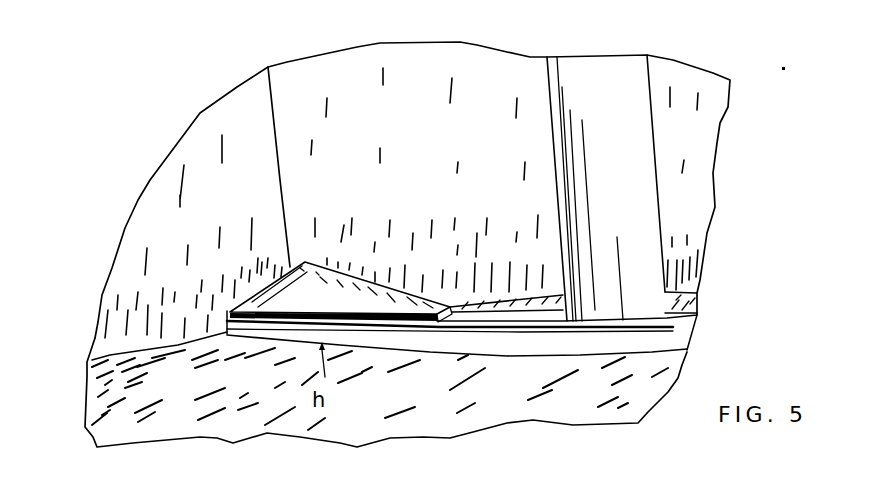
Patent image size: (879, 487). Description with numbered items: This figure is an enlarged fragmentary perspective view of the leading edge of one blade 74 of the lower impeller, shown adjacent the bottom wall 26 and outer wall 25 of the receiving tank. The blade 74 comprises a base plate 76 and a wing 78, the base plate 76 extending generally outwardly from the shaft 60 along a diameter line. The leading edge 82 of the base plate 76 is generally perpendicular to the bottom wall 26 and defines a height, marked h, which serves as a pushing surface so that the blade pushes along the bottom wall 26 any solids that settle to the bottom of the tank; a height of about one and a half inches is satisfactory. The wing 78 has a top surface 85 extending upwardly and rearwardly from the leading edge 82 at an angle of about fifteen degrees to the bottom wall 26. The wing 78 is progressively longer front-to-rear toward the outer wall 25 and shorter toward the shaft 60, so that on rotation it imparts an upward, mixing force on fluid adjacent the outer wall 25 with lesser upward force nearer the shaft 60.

The outer wall 25 is at (200, 142).
The bottom wall 26 is at (107, 358).
The shaft 60 is at (653, 85).
The blade 74 is at (502, 349).
The base plate 76 is at (478, 314).
The wing 78 is at (350, 278).
The leading edge 82 is at (386, 338).
The top surface 85 is at (315, 294).